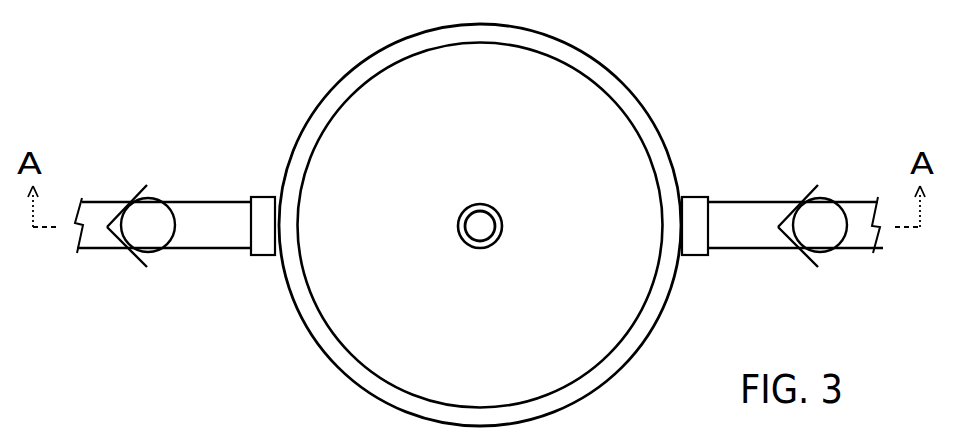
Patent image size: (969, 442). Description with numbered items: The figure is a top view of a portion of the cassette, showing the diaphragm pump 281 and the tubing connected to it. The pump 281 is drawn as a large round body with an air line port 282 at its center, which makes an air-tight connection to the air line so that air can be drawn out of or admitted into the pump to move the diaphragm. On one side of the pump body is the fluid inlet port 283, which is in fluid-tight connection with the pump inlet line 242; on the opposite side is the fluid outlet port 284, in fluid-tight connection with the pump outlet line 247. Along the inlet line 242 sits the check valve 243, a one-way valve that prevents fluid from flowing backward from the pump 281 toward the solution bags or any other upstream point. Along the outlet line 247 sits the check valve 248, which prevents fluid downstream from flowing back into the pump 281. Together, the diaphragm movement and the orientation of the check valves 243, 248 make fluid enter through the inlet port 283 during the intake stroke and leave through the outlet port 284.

The pump 281 is at (320, 108).
The air line port 282 is at (493, 202).
The fluid inlet port 283 is at (253, 197).
The fluid outlet port 284 is at (703, 197).
The pump inlet line 242 is at (197, 238).
The check valve 243 is at (152, 198).
The pump outlet line 247 is at (760, 238).
The check valve 248 is at (832, 198).